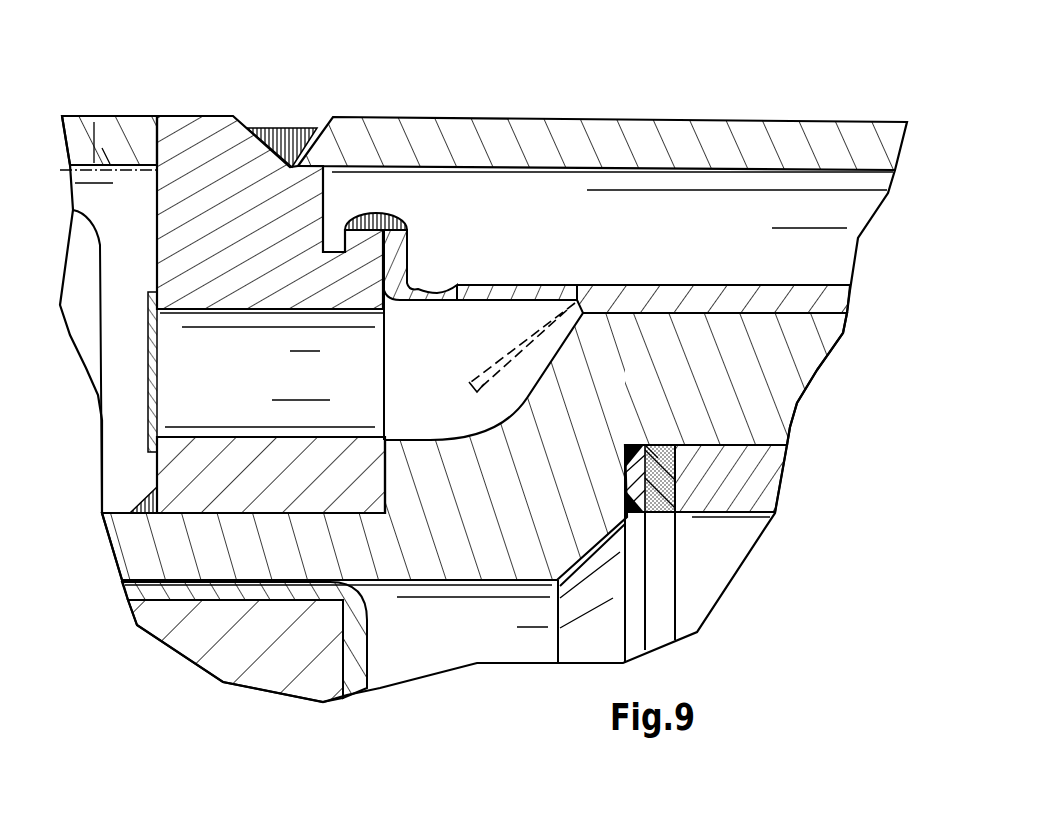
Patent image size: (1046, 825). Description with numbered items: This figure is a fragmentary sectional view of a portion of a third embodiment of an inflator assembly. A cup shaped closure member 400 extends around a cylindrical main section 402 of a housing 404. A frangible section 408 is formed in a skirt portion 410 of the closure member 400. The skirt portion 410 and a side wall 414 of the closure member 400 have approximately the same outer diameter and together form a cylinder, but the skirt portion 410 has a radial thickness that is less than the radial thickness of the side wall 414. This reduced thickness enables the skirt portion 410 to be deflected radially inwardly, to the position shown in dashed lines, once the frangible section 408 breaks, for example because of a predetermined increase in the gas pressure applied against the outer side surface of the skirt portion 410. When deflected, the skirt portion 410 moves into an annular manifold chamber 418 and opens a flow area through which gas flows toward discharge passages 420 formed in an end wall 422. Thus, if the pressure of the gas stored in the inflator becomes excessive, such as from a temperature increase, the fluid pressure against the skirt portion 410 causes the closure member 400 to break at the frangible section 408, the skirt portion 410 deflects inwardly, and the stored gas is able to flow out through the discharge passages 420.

The closure member 400 is at (755, 288).
The cylindrical main section 402 is at (738, 355).
The housing 404 is at (797, 424).
The frangible section 408 is at (438, 287).
The skirt portion 410 is at (513, 293).
The side wall 414 is at (678, 297).
The annular manifold chamber 418 is at (457, 335).
The discharge passages 420 is at (197, 372).
The end wall 422 is at (203, 212).